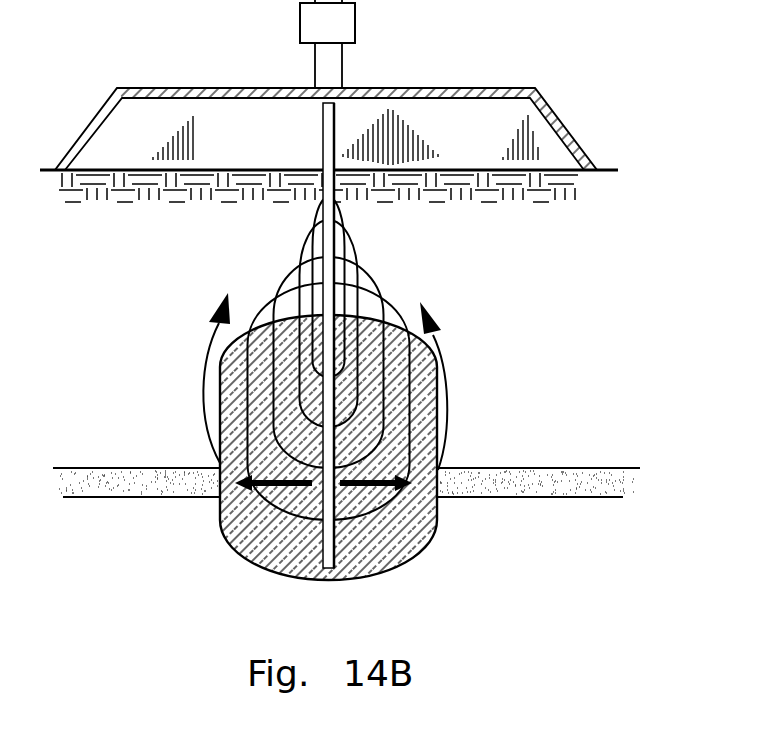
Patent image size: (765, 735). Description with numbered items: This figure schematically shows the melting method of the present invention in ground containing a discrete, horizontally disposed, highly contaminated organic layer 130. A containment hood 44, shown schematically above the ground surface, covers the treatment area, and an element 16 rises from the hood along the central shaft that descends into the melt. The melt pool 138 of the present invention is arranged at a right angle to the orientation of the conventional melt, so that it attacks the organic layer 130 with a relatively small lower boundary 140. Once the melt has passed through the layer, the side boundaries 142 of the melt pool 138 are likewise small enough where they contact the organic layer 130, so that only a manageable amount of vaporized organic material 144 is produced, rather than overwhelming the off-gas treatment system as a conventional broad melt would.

The drive unit 16 is at (355, 30).
The containment hood 44 is at (453, 88).
The highly contaminated organic layer 130 is at (595, 487).
The melt pool 138 is at (437, 313).
The lower boundary 140 is at (345, 582).
The side boundaries 142 is at (222, 483).
The vaporized organic material 144 is at (222, 300).